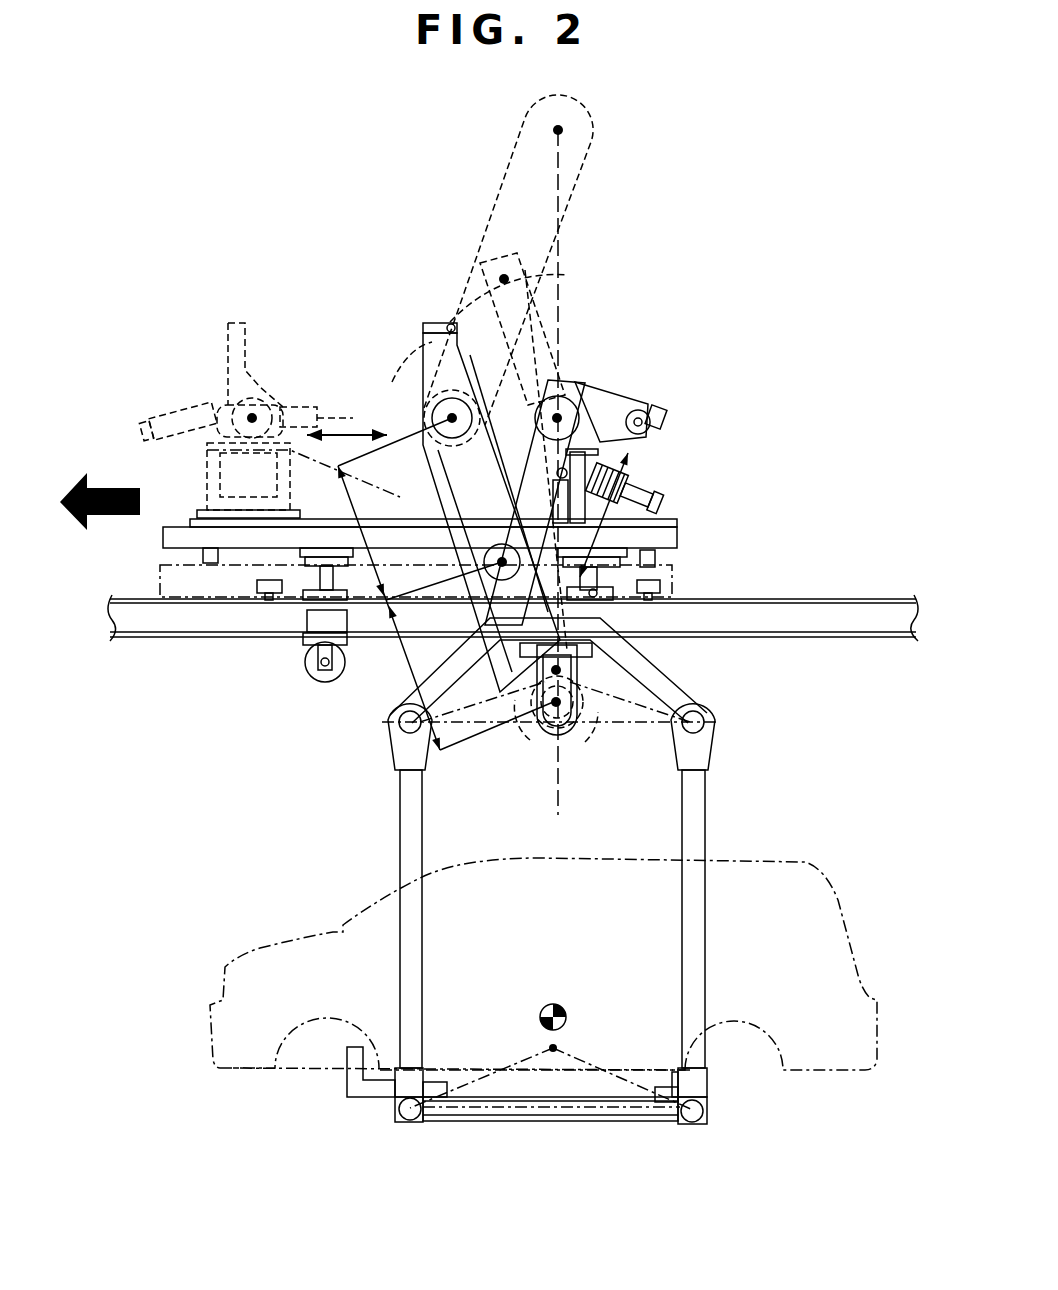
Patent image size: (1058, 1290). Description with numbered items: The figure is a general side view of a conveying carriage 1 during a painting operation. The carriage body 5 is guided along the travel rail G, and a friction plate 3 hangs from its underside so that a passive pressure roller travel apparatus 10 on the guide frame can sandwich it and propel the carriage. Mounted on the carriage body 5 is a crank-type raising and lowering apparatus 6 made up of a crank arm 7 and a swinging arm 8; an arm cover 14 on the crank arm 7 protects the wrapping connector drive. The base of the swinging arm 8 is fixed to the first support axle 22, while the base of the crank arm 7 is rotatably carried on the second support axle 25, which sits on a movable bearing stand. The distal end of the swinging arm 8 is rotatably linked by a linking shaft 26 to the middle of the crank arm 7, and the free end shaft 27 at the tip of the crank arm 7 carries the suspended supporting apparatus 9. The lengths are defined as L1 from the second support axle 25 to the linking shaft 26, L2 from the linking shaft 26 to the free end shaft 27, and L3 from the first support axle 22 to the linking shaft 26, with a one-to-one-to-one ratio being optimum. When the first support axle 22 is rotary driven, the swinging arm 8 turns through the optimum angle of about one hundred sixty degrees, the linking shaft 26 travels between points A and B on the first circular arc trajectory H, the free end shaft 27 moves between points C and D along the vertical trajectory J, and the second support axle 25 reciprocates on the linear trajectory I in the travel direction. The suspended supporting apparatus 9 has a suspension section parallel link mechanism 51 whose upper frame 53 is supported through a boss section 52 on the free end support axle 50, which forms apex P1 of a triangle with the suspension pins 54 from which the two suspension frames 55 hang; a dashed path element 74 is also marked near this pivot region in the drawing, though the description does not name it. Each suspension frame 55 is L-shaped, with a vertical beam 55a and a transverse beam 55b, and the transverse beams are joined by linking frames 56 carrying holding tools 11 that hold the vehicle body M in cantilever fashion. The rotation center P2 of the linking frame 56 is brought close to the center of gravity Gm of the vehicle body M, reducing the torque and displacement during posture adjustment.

The conveying carriage 1 is at (690, 318).
The friction plate 3 is at (175, 583).
The carriage body 5 is at (685, 529).
The raising and lowering apparatus 6 is at (585, 357).
The crank arm 7 is at (467, 641).
The swinging arm 8 is at (495, 497).
The suspended supporting apparatus 9 is at (748, 692).
The pressure roller travel apparatus 10 is at (253, 598).
The holding tool 11 is at (358, 1058).
The arm cover 14 is at (485, 563).
The first support axle 22 is at (562, 415).
The second support axle 25 is at (440, 408).
The linking shaft 26 is at (467, 604).
The free end shaft 27 is at (560, 748).
The free end support axle 50 is at (598, 725).
The suspension section parallel link mechanism 51 is at (718, 803).
The boss section 52 is at (520, 735).
The upper frame 53 is at (655, 690).
The suspension pin 54 is at (388, 720).
The suspension frame 55 is at (392, 968).
The vertical beam 55a is at (413, 820).
The transverse beam 55b is at (409, 1125).
The linking frame 56 is at (553, 1121).
The swing path 74 is at (528, 740).
The point A is at (497, 545).
The point B is at (504, 279).
The point C is at (546, 739).
The point D is at (563, 130).
The travel rail G is at (876, 623).
The first circular arc trajectory H is at (460, 303).
The linear trajectory I is at (320, 418).
The vertical trajectory J is at (560, 272).
The vehicle body M is at (620, 858).
The center of gravity Gm is at (566, 1012).
The apex P1 is at (548, 668).
The apex point P2 is at (560, 1047).
The length L1 is at (420, 584).
The length L2 is at (470, 708).
The length L3 is at (633, 508).